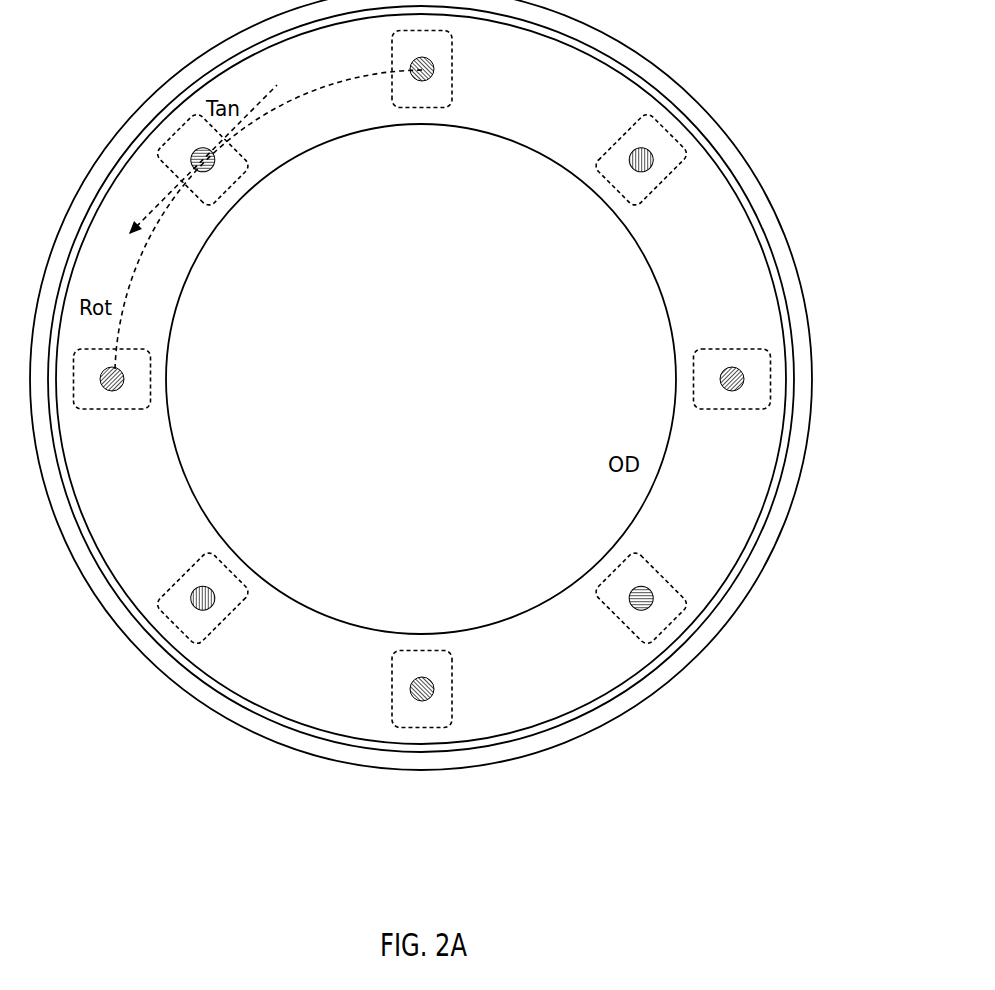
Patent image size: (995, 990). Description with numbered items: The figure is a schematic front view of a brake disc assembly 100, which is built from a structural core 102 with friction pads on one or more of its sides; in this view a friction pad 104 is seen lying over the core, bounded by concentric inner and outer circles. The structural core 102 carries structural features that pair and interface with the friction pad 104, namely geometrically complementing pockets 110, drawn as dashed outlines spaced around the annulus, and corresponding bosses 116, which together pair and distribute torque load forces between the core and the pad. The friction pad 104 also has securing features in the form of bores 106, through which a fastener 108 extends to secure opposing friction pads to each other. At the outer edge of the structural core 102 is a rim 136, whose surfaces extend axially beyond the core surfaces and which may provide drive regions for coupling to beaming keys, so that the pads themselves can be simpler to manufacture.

The brake disc assembly 100 is at (699, 46).
The structural core 102 is at (786, 147).
The friction pad 104 is at (722, 262).
The bore 106 is at (733, 372).
The fastener 108 is at (734, 383).
The pocket 110 is at (750, 350).
The boss 116 is at (712, 362).
The rim 136 is at (732, 597).